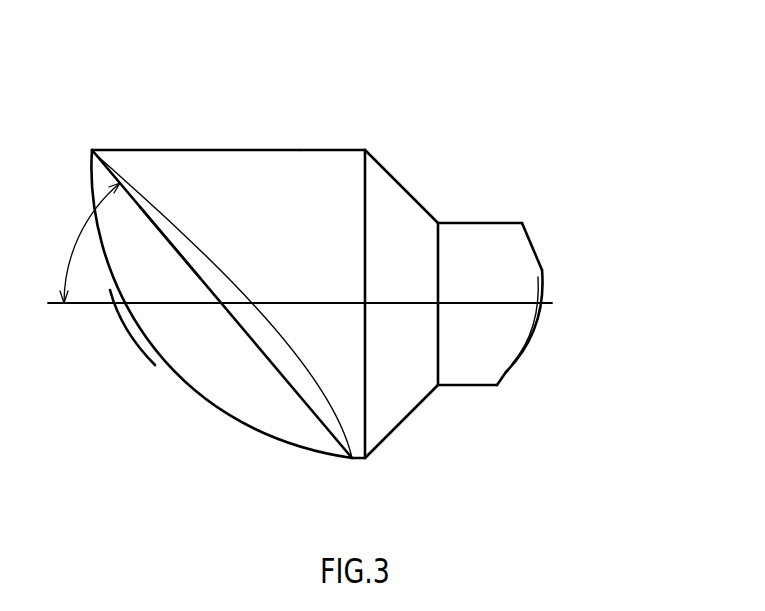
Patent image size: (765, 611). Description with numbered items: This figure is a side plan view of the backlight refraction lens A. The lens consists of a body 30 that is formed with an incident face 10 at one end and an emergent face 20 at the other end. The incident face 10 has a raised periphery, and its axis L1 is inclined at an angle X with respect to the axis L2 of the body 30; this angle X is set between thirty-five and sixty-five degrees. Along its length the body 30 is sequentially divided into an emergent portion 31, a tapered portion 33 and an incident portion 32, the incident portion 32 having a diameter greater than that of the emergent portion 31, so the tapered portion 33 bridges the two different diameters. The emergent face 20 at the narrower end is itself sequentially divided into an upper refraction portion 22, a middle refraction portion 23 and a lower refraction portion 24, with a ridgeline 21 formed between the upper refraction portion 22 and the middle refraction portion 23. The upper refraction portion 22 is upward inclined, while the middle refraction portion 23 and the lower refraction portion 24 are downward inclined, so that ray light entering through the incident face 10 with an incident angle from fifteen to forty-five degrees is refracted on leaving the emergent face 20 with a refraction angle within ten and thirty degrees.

The incident face 10 is at (218, 410).
The emergent face 20 is at (640, 272).
The ridgeline 21 is at (543, 275).
The upper refraction portion 22 is at (530, 243).
The middle refraction portion 23 is at (527, 328).
The lower refraction portion 24 is at (513, 363).
The body 30 is at (465, 72).
The emergent portion 31 is at (482, 223).
The incident portion 32 is at (317, 150).
The tapered portion 33 is at (405, 190).
The axis of the incident face L1 is at (175, 243).
The axis of the body L2 is at (152, 303).
The angle X is at (88, 243).
The backlight refraction lens A is at (575, 138).